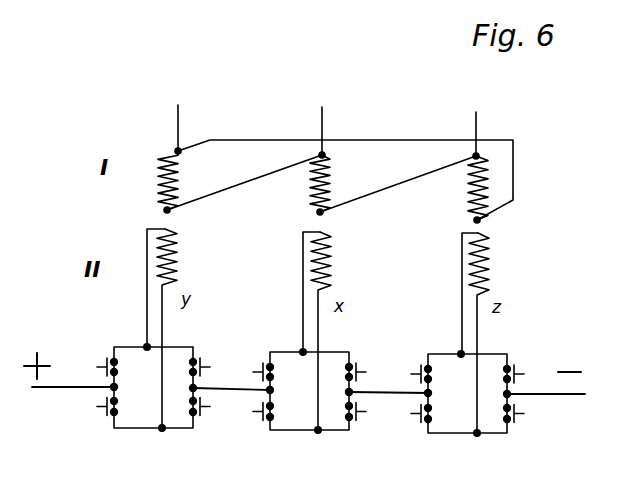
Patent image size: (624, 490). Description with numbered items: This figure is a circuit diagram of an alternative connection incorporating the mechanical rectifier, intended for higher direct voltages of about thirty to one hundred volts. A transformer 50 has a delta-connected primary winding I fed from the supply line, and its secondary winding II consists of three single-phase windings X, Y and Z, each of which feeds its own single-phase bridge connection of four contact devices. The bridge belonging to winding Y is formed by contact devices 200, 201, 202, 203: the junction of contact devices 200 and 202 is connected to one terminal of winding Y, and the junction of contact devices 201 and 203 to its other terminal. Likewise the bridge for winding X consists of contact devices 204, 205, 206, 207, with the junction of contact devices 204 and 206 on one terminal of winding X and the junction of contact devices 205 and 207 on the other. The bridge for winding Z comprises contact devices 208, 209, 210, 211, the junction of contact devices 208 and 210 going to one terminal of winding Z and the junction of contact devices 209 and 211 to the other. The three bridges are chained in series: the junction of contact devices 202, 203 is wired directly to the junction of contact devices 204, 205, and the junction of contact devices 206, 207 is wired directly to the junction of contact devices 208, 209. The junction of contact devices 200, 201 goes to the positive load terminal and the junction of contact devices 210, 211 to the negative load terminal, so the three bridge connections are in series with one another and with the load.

The transformer 50 is at (335, 169).
The contact device 200 is at (94, 367).
The contact device 201 is at (94, 410).
The contact device 202 is at (213, 366).
The contact device 203 is at (214, 409).
The contact device 204 is at (257, 369).
The contact device 205 is at (257, 412).
The contact device 206 is at (368, 369).
The contact device 207 is at (368, 413).
The contact device 208 is at (416, 371).
The contact device 209 is at (416, 415).
The contact device 210 is at (526, 371).
The contact device 211 is at (526, 415).